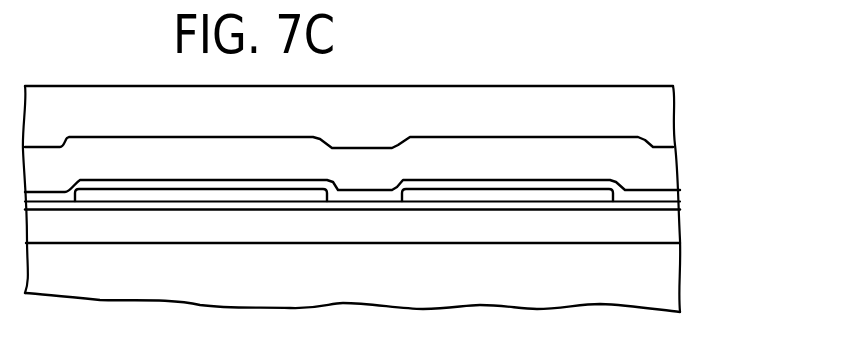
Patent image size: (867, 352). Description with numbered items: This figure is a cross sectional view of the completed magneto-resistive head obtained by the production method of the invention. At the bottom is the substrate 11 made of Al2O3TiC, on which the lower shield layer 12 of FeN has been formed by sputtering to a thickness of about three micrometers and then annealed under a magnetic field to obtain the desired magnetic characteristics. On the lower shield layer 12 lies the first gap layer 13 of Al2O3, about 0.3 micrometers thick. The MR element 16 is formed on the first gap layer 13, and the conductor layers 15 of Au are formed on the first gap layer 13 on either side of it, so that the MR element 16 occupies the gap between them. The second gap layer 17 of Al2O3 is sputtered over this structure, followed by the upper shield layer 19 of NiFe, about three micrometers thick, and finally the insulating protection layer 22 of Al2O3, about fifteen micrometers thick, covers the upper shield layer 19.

The substrate 11 is at (668, 273).
The lower shield layer 12 is at (653, 232).
The first gap layer 13 is at (672, 203).
The conductor layers 15 is at (445, 193).
The MR element 16 is at (358, 201).
The second gap layer 17 is at (672, 195).
The upper shield layer 19 is at (665, 177).
The insulating protection layer 22 is at (563, 107).